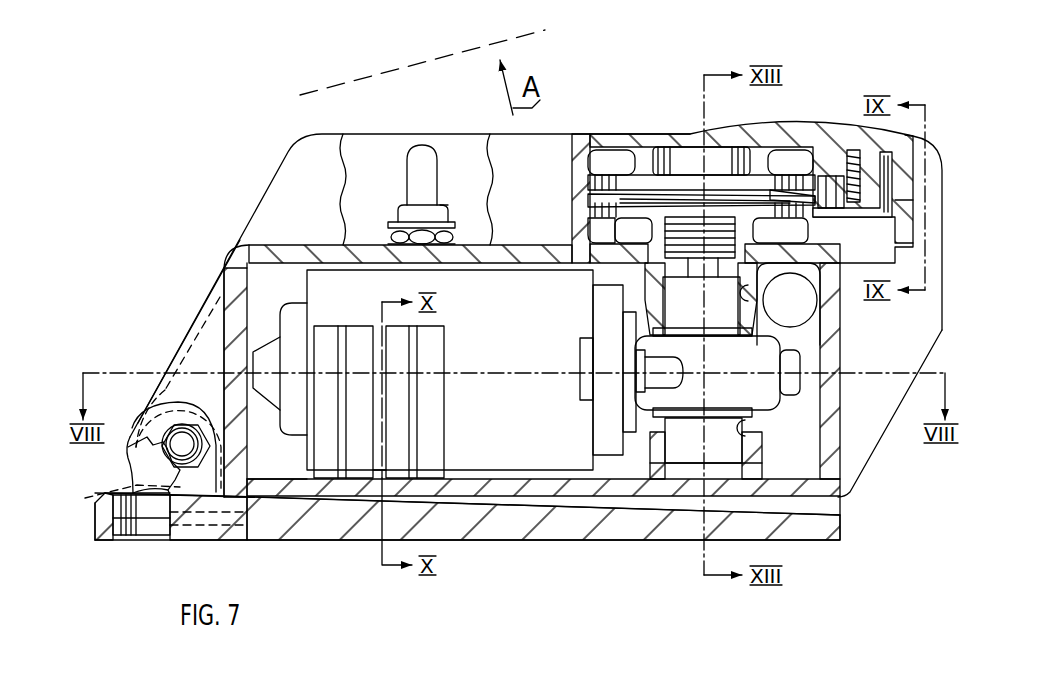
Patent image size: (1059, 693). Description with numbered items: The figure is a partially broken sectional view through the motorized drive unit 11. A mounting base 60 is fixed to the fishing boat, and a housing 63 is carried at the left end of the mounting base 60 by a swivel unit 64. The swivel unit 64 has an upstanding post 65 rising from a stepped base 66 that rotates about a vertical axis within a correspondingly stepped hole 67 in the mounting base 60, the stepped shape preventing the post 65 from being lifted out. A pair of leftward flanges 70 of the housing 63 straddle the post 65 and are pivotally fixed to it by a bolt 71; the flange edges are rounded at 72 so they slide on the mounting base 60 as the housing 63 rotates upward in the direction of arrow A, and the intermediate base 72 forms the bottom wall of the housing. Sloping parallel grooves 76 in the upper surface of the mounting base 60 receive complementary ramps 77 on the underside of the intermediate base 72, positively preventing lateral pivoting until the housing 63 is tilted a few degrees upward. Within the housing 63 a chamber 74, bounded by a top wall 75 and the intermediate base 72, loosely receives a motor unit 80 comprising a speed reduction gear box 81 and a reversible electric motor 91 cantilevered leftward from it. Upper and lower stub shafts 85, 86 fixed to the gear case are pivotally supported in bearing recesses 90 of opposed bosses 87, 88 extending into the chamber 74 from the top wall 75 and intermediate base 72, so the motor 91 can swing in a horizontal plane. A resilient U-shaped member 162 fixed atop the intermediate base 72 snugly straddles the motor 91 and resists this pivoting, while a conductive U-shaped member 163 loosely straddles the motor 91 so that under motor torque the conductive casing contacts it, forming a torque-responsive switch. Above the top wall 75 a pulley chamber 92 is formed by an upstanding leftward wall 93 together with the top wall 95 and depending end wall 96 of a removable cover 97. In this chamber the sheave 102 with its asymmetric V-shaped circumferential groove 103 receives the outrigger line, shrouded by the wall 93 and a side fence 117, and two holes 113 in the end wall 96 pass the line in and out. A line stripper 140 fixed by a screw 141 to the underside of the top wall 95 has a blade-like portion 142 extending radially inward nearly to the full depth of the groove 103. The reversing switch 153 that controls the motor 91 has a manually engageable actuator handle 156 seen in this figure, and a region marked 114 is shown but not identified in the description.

The motorized drive unit 11 is at (238, 143).
The mounting base 60 is at (328, 520).
The housing 63 is at (219, 262).
The swivel unit 64 is at (127, 452).
The upstanding post 65 is at (146, 465).
The stepped base 66 is at (153, 536).
The stepped hole 67 is at (125, 536).
The flanges 70 is at (165, 398).
The bolt 71 is at (173, 442).
The intermediate base 72 is at (636, 560).
The chamber 74 is at (247, 243).
The top wall 75 is at (277, 250).
The sloping parallel grooves 76 is at (532, 500).
The ramps 77 is at (574, 494).
The motor unit 80 is at (308, 452).
The speed reduction gear box 81 is at (782, 412).
The upper stub shaft 85 is at (701, 296).
The lower stub shaft 86 is at (706, 448).
The upper boss 87 is at (754, 302).
The lower boss 88 is at (758, 462).
The bearing recesses 90 is at (748, 300).
The motor 91 is at (468, 370).
The pulley chamber 92 is at (590, 226).
The leftward wall 93 is at (580, 157).
The cover top wall 95 is at (633, 147).
The depending end wall 96 is at (905, 178).
The cover 97 is at (648, 126).
The sheave 102 is at (613, 175).
The circumferential groove 103 is at (600, 200).
The holes 113 is at (918, 210).
The cavity 114 is at (898, 410).
The side fence 117 is at (833, 188).
The line stripper 140 is at (853, 150).
The screw 141 is at (886, 165).
The blade-like portion 142 is at (790, 192).
The reversing switch 153 is at (448, 204).
The actuator handle 156 is at (420, 155).
The resilient U-shaped member 162 is at (362, 330).
The conductive U-shaped member 163 is at (434, 428).